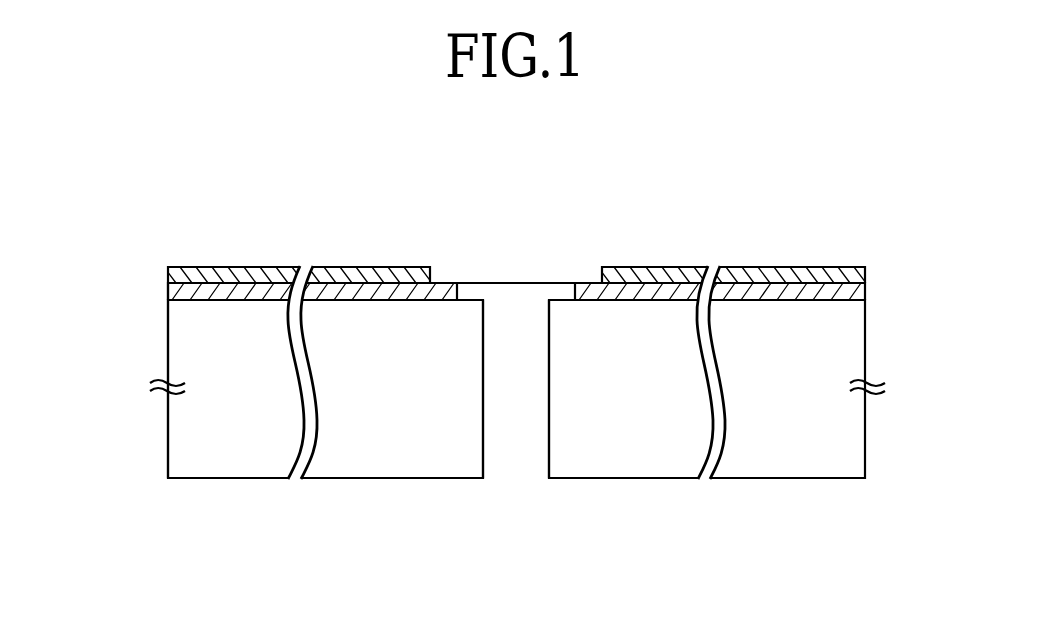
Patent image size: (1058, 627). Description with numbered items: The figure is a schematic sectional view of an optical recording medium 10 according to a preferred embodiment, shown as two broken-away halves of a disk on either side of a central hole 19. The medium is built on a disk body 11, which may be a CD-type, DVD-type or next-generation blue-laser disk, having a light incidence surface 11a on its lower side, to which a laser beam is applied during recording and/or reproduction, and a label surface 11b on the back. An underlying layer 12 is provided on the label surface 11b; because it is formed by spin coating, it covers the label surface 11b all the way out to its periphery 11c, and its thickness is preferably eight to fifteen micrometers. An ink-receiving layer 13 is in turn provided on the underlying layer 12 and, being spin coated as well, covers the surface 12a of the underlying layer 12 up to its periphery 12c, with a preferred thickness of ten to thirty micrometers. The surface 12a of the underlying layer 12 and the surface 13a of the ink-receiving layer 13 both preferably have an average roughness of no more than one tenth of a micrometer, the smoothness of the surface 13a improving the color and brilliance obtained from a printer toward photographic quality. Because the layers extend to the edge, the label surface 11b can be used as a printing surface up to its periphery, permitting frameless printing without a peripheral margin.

The optical recording medium 10 is at (828, 155).
The disk body 11 is at (838, 448).
The light incidence surface 11a is at (377, 478).
The label surface 11b is at (346, 300).
The periphery of the label surface 11c is at (168, 298).
The underlying layer 12 is at (862, 292).
The surface of the underlying layer 12a is at (213, 268).
The periphery of the underlying layer surface 12c is at (168, 284).
The ink-receiving layer 13 is at (862, 274).
The surface of the ink-receiving layer 13a is at (393, 267).
The central hole 19 is at (520, 272).